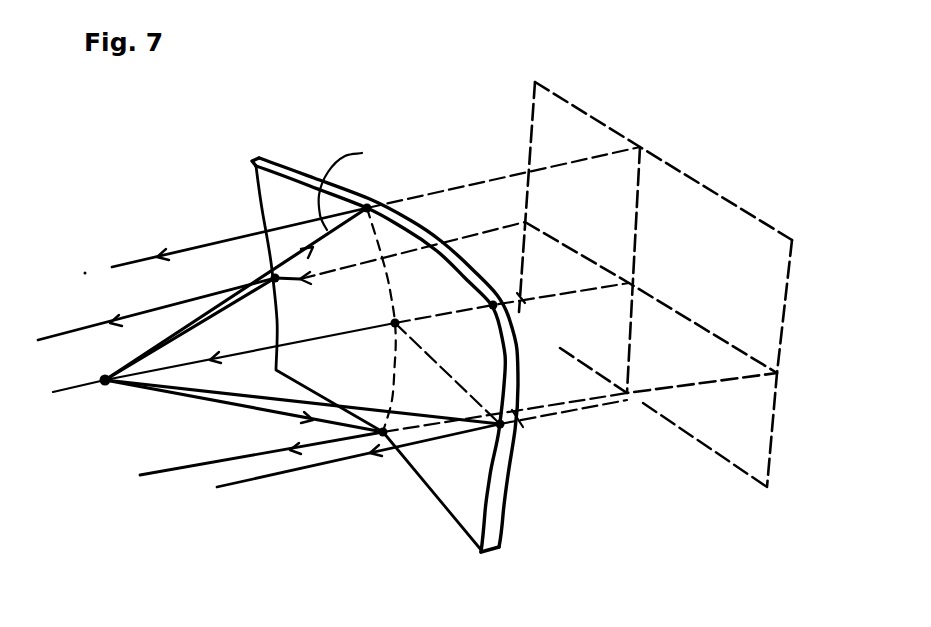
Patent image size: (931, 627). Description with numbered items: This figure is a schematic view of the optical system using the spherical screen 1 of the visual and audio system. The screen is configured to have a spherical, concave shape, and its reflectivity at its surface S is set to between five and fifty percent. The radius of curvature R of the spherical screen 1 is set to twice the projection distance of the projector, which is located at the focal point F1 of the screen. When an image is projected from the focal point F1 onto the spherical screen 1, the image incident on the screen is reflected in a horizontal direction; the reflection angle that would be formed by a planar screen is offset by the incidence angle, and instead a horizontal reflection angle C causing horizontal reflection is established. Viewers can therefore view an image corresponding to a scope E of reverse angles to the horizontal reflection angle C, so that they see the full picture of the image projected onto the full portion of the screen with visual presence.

The spherical screen 1 is at (520, 320).
The surface S is at (455, 482).
The radius of curvature R is at (253, 207).
The focal point F1 is at (224, 376).
The horizontal reflection angle C is at (385, 143).
The scope E is at (787, 302).